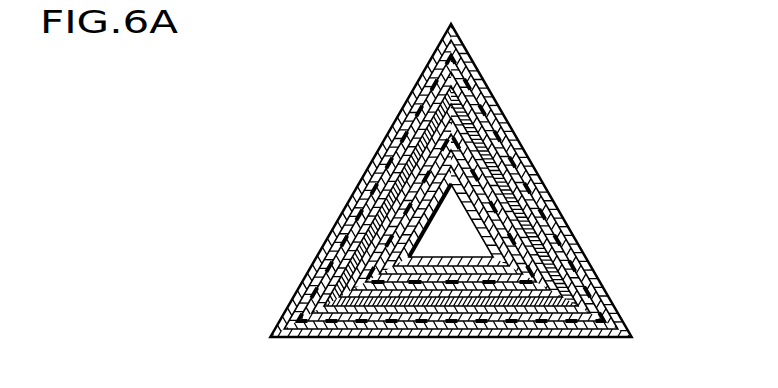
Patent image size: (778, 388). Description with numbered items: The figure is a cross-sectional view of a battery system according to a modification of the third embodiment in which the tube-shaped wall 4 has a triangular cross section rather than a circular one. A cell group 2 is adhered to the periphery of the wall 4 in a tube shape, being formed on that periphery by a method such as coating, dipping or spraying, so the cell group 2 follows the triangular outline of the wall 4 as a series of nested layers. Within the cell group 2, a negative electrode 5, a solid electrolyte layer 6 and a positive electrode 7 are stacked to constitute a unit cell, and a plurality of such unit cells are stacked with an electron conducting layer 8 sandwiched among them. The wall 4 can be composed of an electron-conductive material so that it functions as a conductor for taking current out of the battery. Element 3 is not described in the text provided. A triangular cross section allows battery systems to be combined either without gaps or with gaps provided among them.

The cell group 2 is at (558, 85).
The hollow core 3 is at (432, 242).
The wall 4 is at (410, 177).
The negative electrode 5 is at (480, 129).
The solid electrolyte layer 6 is at (490, 157).
The positive electrode 7 is at (500, 203).
The electron conducting layer 8 is at (560, 253).